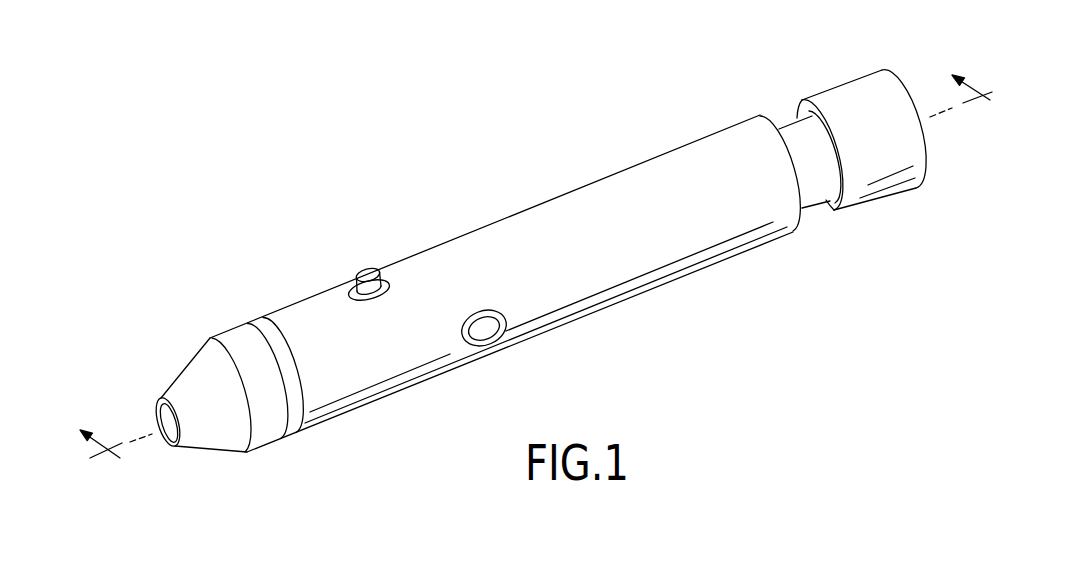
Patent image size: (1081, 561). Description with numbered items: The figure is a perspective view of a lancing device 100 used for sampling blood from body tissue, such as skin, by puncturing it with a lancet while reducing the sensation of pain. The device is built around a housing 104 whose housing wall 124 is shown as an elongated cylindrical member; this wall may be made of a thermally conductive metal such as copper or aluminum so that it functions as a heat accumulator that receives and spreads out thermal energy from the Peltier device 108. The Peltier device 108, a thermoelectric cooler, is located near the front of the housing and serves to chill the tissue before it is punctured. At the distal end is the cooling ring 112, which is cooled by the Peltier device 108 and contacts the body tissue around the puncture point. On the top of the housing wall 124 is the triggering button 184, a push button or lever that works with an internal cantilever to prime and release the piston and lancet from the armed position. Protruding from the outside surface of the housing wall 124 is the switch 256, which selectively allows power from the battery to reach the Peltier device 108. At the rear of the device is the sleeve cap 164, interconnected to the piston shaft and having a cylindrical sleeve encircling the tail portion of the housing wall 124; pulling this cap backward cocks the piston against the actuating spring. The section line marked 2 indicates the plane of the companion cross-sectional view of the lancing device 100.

The lancing device 100 is at (547, 102).
The housing 104 is at (507, 215).
The housing wall 124 is at (612, 172).
The Peltier device 108 is at (240, 323).
The cooling ring 112 is at (193, 358).
The triggering button 184 is at (368, 268).
The switch 256 is at (485, 333).
The sleeve cap 164 is at (883, 197).
The section line 2- 2 is at (540, 273).